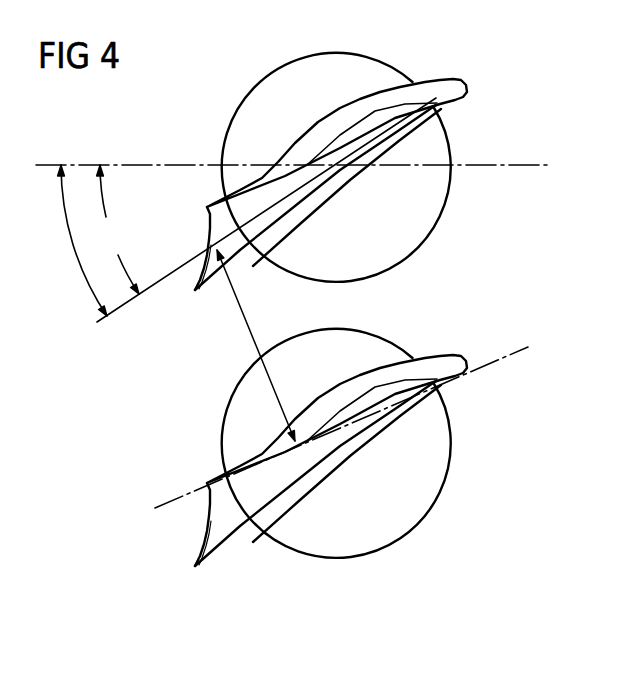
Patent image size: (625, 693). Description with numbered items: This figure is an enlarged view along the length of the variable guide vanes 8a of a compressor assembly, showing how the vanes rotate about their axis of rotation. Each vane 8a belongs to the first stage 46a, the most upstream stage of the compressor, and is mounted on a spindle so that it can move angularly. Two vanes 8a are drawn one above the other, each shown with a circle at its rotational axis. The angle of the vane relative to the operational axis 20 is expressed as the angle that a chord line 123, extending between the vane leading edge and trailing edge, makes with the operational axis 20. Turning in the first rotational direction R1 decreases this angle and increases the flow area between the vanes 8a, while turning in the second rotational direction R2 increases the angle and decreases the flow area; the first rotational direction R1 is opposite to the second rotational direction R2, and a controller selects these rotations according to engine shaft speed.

The operational axis 20 is at (508, 164).
The vane 8a is at (210, 229).
The first rotational direction R1 is at (103, 198).
The second rotational direction R2 is at (121, 262).
The chord line 123 is at (175, 500).
The first stage 46a is at (312, 592).